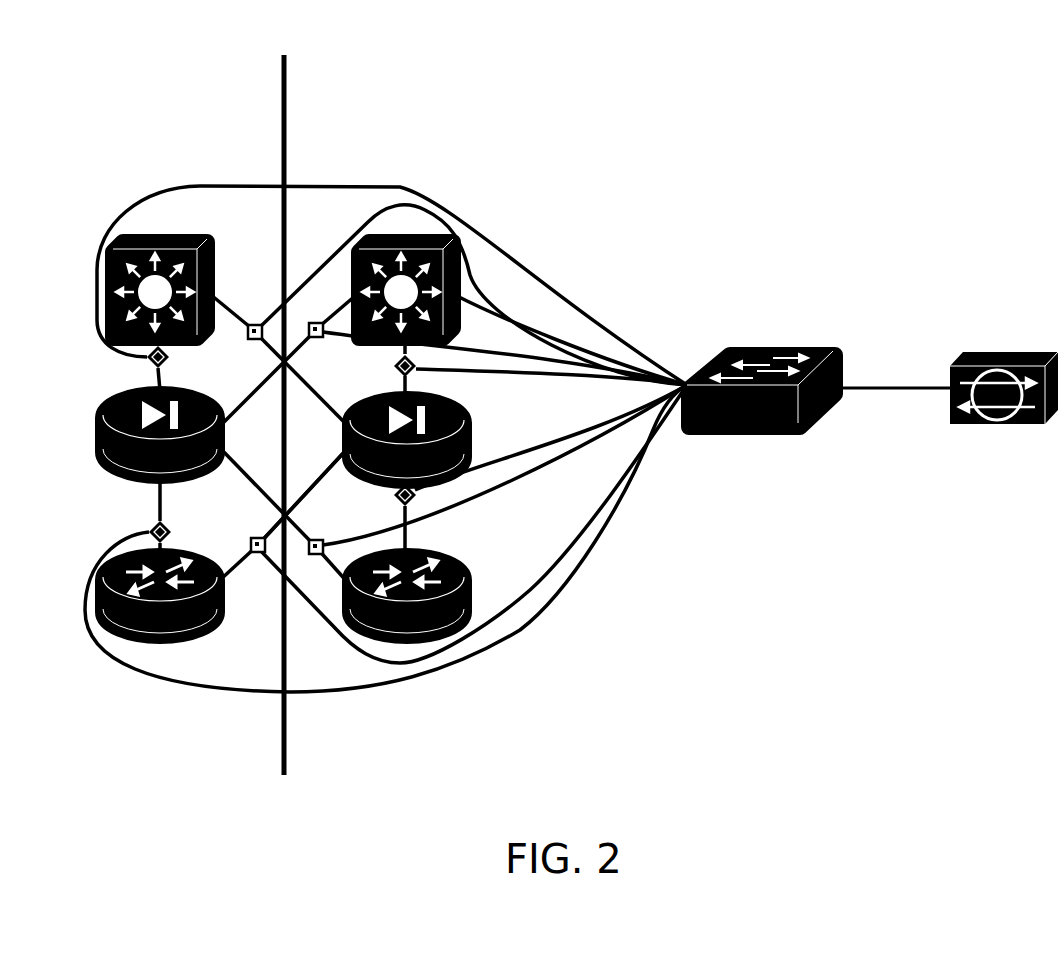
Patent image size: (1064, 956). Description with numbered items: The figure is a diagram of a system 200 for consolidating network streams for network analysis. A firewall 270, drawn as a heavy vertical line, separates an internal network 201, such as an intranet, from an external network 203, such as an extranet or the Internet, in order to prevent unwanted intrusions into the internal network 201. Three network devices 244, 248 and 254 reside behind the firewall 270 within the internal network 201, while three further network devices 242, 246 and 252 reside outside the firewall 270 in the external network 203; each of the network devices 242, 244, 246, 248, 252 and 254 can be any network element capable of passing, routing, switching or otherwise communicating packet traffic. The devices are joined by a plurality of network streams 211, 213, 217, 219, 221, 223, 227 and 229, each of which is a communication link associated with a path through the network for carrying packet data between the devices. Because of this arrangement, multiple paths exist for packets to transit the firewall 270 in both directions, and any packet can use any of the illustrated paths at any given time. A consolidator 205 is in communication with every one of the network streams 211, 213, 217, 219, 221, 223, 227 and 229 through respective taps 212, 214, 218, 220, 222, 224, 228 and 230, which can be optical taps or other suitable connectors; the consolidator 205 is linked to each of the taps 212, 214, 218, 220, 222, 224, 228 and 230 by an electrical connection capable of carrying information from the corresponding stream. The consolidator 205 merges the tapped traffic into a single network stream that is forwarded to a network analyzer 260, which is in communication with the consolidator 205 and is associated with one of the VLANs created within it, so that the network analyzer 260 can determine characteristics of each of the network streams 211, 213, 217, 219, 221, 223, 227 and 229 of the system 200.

The system 200 is at (820, 665).
The internal network 201 is at (472, 356).
The external network 203 is at (362, 370).
The consolidator 205 is at (762, 346).
The network stream 211 is at (220, 295).
The tap 212 is at (252, 343).
The network stream 213 is at (347, 303).
The tap 214 is at (317, 340).
The network stream 217 is at (245, 462).
The tap 218 is at (333, 527).
The network stream 219 is at (343, 460).
The tap 220 is at (250, 540).
The network stream 221 is at (155, 382).
The tap 222 is at (167, 363).
The network stream 223 is at (413, 387).
The tap 224 is at (397, 374).
The network stream 227 is at (158, 488).
The tap 228 is at (150, 531).
The network stream 229 is at (413, 524).
The tap 230 is at (399, 504).
The network device 242 is at (165, 239).
The network device 244 is at (457, 317).
The network device 246 is at (105, 428).
The network device 248 is at (464, 425).
The network device 252 is at (197, 628).
The network device 254 is at (457, 563).
The network analyzer 260 is at (1012, 343).
The firewall 270 is at (278, 748).